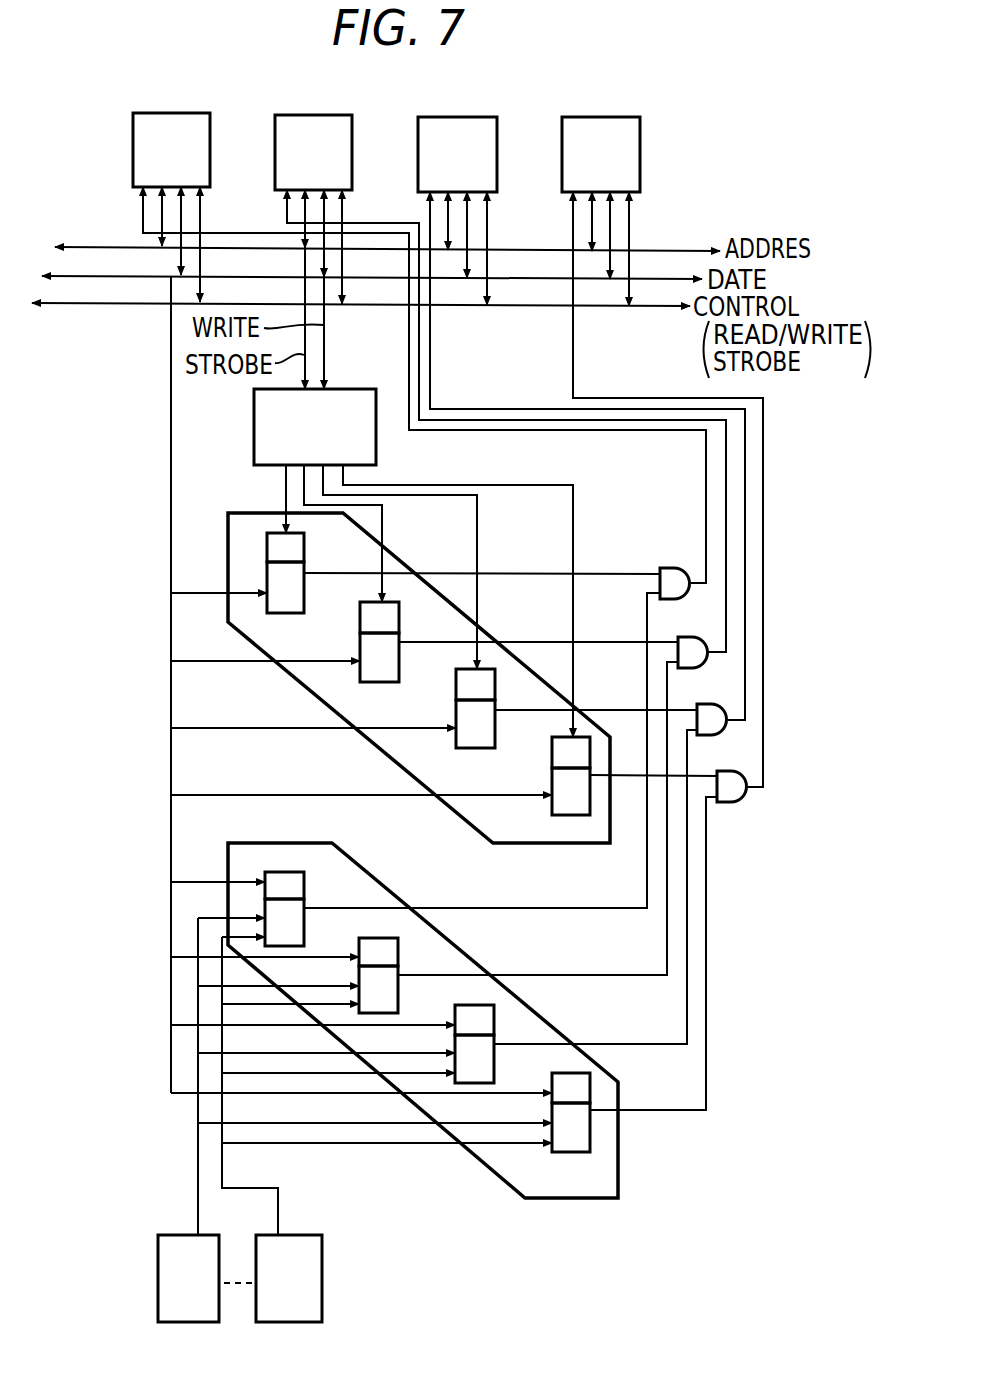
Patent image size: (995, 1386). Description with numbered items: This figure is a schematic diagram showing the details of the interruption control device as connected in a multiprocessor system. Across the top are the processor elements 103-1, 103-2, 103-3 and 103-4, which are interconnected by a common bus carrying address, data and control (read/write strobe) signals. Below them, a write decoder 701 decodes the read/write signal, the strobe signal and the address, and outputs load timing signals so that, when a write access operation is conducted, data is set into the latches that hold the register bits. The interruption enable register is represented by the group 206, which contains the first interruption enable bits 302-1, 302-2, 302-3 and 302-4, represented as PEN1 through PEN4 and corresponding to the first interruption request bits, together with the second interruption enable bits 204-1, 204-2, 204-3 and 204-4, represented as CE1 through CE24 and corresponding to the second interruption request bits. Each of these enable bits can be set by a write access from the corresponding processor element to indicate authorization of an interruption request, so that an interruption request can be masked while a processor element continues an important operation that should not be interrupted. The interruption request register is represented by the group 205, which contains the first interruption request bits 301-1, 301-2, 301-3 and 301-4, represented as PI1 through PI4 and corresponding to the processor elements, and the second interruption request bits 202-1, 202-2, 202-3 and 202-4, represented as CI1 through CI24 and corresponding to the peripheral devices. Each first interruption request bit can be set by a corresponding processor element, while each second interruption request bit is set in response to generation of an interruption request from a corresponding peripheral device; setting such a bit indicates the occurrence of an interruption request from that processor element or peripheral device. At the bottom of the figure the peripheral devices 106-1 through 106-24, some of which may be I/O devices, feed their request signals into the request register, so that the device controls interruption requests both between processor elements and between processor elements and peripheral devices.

The processor element 103-1 is at (171, 113).
The processor element 103-2 is at (301, 115).
The processor element 103-3 is at (449, 117).
The processor element 103-4 is at (594, 117).
The write decoder 701 is at (254, 412).
The first interruption enable bit 302-1 is at (270, 533).
The first interruption enable bit 302-2 is at (360, 617).
The first interruption enable bit 302-3 is at (456, 683).
The first interruption enable bit 302-4 is at (552, 755).
The second interruption enable bit 204-1 is at (267, 605).
The second interruption enable bit 204-2 is at (360, 670).
The second interruption enable bit 204-3 is at (456, 738).
The second interruption enable bit 204-4 is at (552, 805).
The interruption enable bits CE1-24 206 is at (580, 843).
The first interruption request bit 301-1 is at (304, 885).
The first interruption request bit 301-2 is at (398, 952).
The first interruption request bit 301-3 is at (494, 1018).
The first interruption request bit 301-4 is at (590, 1092).
The second interruption request bit 202-1 is at (304, 922).
The second interruption request bit 202-2 is at (398, 990).
The second interruption request bit 202-3 is at (494, 1062).
The second interruption request bit 202-4 is at (590, 1133).
The interruption request bits CI1-24 205 is at (595, 1198).
The peripheral device 106-1 is at (158, 1272).
The peripheral device 106-24 is at (322, 1283).